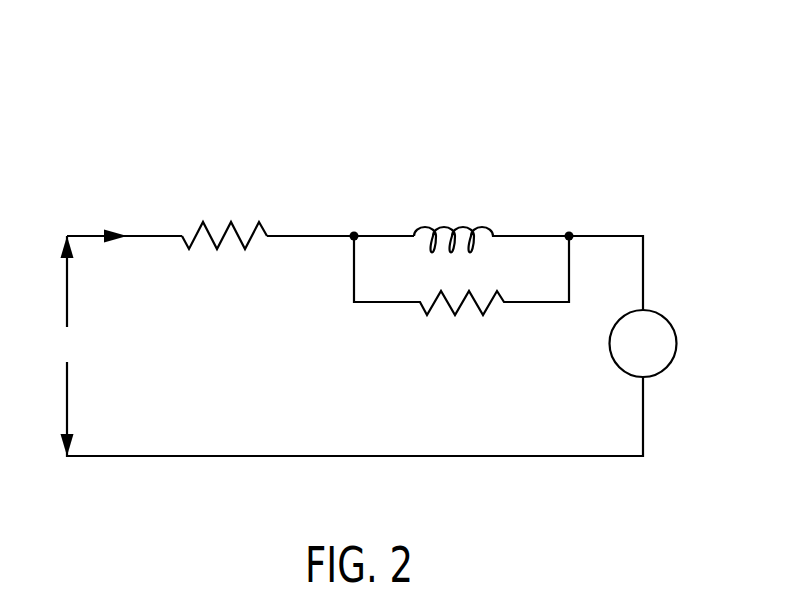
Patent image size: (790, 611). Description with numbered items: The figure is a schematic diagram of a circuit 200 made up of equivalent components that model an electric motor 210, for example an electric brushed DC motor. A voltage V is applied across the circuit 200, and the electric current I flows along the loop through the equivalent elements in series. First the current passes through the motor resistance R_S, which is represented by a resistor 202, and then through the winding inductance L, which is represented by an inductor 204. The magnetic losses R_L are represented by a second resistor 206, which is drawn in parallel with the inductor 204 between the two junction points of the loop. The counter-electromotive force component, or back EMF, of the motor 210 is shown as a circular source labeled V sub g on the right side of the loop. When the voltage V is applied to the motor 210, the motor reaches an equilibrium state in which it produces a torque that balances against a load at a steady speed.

The circuit 200 is at (124, 162).
The resistor 202 is at (206, 228).
The inductor 204 is at (467, 231).
The resistor 206 is at (428, 308).
The motor 210 is at (657, 313).